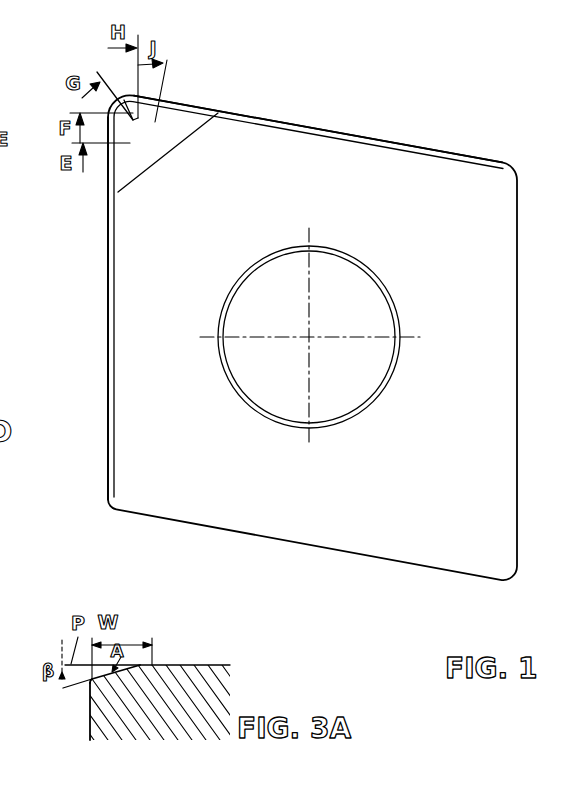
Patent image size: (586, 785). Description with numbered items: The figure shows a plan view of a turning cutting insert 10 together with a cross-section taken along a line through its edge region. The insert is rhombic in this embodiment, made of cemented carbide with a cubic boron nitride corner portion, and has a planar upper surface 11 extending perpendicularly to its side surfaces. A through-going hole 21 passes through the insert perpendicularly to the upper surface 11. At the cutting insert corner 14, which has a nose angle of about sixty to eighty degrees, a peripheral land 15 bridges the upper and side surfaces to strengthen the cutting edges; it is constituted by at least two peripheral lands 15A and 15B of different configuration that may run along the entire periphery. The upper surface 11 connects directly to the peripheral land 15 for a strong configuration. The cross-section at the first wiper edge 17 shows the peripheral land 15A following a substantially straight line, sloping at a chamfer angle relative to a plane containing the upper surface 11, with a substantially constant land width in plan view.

In FIG. 1, the turning cutting insert 10 is at (355, 118).
In FIG. 1, the upper surface 11 is at (480, 423).
In FIG. 1, the cutting insert corner 14 is at (180, 69).
In FIG. 1, the peripheral land 15 is at (110, 238).
In FIG. 1, the peripheral land 15A is at (114, 385).
In FIG. 3A, the peripheral land 15A is at (115, 668).
In FIG. 1, the peripheral land 15B is at (378, 140).
In FIG. 3A, the first wiper edge 17 is at (88, 681).
In FIG. 1, the through-going hole 21 is at (364, 273).